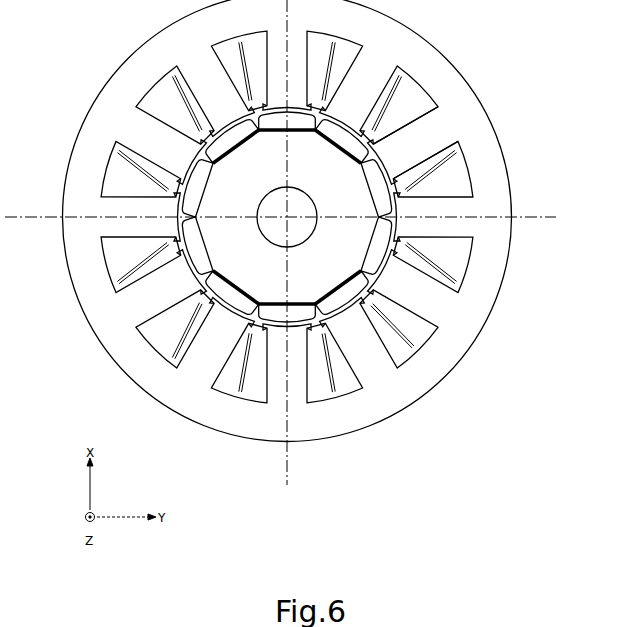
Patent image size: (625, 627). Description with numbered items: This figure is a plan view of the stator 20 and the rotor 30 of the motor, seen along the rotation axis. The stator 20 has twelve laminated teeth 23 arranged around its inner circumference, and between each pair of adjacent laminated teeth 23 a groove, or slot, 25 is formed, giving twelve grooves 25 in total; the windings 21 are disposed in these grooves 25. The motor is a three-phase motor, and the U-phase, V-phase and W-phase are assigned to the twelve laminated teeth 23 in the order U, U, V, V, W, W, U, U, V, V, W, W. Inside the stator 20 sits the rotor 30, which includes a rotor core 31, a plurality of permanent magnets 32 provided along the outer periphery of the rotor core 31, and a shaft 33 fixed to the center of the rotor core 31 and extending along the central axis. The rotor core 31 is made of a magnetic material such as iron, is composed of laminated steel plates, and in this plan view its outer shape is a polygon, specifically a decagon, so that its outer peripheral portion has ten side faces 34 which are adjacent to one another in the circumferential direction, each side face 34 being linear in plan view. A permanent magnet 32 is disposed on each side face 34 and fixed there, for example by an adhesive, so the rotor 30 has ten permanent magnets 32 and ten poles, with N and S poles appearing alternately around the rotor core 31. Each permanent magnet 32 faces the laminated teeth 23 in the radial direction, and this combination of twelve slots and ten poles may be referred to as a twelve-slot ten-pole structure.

The stator 20 is at (453, 65).
The windings 21 is at (443, 187).
The laminated teeth 23 is at (407, 142).
The grooves (slots) 25 is at (408, 180).
The rotor 30 is at (293, 237).
The rotor core 31 is at (228, 243).
The permanent magnets 32 is at (301, 127).
The shaft 33 is at (298, 203).
The side faces 34 is at (274, 132).